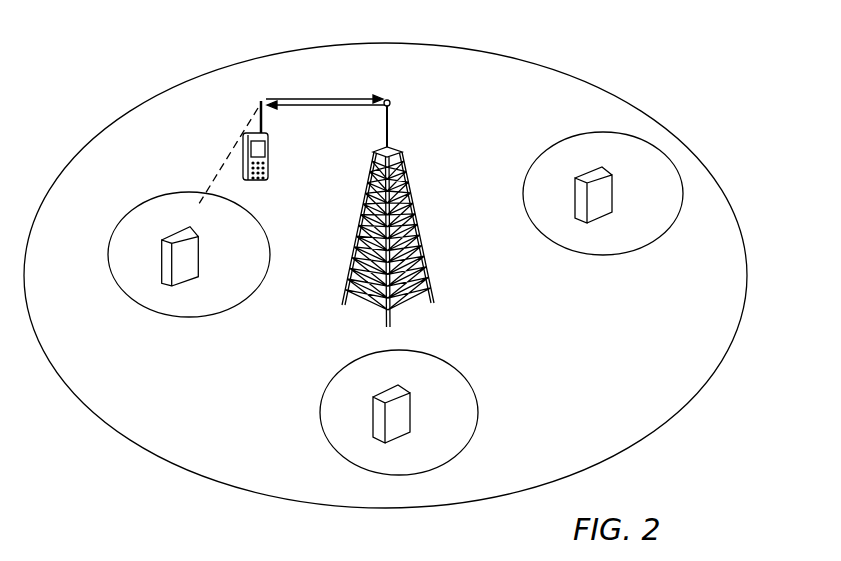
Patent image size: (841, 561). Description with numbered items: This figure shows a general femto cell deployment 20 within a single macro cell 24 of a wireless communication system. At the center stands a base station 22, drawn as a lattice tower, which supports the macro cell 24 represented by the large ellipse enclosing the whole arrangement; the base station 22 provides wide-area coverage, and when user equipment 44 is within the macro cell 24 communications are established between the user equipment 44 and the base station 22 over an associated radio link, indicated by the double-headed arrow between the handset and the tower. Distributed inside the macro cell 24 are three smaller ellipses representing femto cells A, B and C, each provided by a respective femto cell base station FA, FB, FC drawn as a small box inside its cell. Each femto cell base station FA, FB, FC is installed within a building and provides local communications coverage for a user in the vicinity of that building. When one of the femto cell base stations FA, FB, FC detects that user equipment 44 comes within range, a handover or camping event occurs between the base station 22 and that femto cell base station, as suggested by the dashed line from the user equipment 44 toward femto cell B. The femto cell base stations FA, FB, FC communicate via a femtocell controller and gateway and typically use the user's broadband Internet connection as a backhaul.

The femto cell deployment 20 is at (133, 81).
The base station 22 is at (426, 253).
The macro cell 24 is at (568, 73).
The user equipment 44 is at (268, 164).
The femto cell A is at (565, 141).
The femto cell B is at (152, 203).
The femto cell C is at (320, 409).
The femto cell base station FA is at (605, 191).
The femto cell base station FB is at (190, 253).
The femto cell base station FC is at (402, 410).